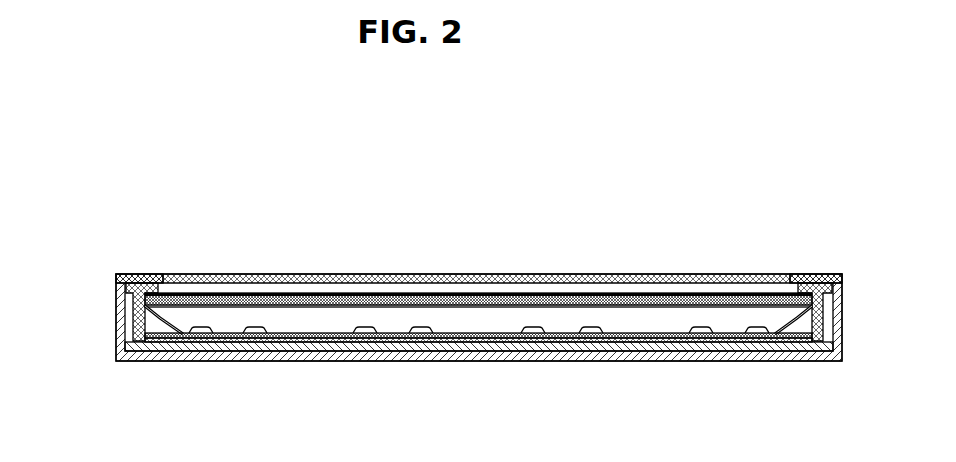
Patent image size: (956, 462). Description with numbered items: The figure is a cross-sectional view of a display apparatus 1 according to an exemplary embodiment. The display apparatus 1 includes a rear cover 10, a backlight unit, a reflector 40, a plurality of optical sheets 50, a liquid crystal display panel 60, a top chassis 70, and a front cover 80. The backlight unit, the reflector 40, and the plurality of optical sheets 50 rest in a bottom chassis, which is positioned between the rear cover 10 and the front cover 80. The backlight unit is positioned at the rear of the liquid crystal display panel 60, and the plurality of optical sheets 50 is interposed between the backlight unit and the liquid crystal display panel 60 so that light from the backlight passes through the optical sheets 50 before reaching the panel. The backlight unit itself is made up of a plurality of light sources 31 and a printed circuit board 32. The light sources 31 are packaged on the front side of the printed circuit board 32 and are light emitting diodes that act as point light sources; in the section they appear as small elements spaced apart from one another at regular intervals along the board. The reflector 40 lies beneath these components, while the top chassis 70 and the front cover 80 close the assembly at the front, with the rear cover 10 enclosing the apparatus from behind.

The display apparatus 1 is at (635, 143).
The rear cover 10 is at (115, 335).
The light sources 31 is at (245, 367).
The printed circuit board 32 is at (313, 367).
The reflector 40 is at (392, 356).
The optical sheets 50 is at (797, 288).
The liquid crystal display panel 60 is at (737, 297).
The top chassis 70 is at (149, 273).
The front cover 80 is at (126, 272).